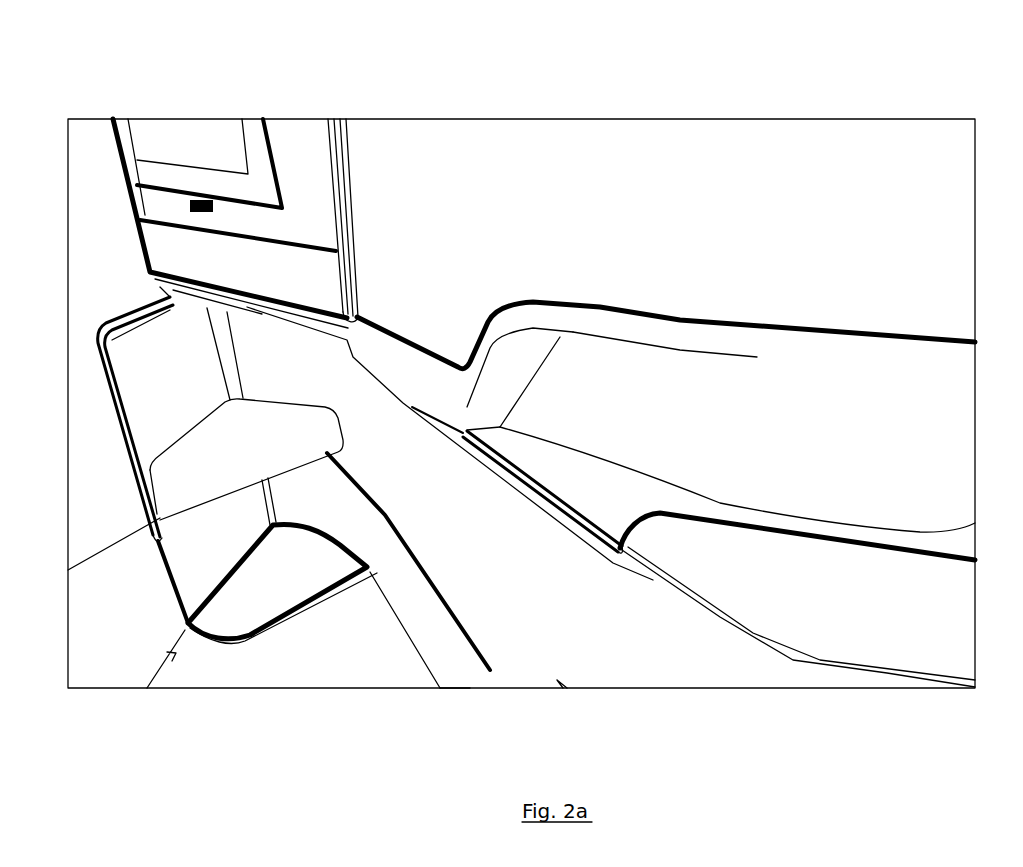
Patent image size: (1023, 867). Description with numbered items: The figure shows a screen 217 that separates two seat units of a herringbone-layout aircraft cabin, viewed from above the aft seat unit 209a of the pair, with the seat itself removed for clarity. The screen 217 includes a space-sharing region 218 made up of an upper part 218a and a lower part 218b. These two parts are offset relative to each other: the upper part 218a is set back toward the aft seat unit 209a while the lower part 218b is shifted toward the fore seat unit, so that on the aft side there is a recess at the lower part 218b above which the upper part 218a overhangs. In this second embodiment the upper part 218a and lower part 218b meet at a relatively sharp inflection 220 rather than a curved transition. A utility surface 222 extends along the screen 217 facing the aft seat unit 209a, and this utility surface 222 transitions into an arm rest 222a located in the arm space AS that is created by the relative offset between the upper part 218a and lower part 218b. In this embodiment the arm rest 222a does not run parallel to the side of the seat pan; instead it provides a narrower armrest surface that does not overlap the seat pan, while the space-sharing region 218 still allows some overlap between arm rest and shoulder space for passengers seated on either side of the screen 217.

The screen 217 is at (877, 260).
The space-sharing region 218 is at (798, 413).
The upper part 218a is at (624, 249).
The lower part 218b is at (598, 430).
The inflection 220 is at (571, 325).
The utility surface 222 is at (812, 590).
The arm rest 222a is at (584, 510).
The aft seat unit 209a is at (681, 679).
The arm space AS is at (524, 434).